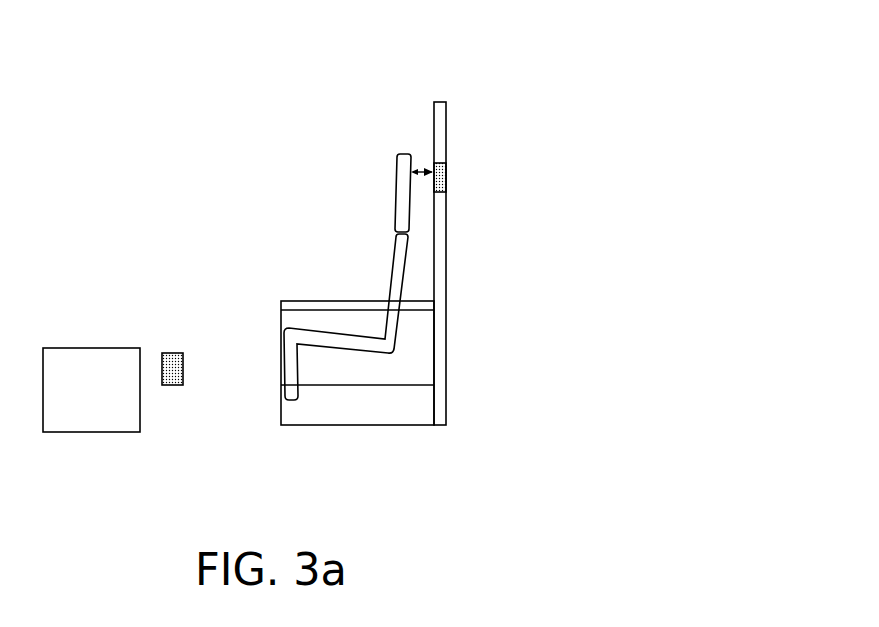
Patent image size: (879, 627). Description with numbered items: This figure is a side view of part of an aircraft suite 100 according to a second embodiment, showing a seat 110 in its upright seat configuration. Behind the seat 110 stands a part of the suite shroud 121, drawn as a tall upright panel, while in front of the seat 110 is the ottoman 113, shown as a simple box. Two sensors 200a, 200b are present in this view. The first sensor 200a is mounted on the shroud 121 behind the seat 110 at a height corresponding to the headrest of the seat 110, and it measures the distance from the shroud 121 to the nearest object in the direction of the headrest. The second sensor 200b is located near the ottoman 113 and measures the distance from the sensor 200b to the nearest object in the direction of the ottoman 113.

The aircraft suite 100 is at (480, 77).
The seat 110 is at (366, 184).
The ottoman 113 is at (69, 417).
The suite shroud 121 is at (443, 261).
The sensor 200a is at (436, 158).
The sensor 200b is at (173, 353).